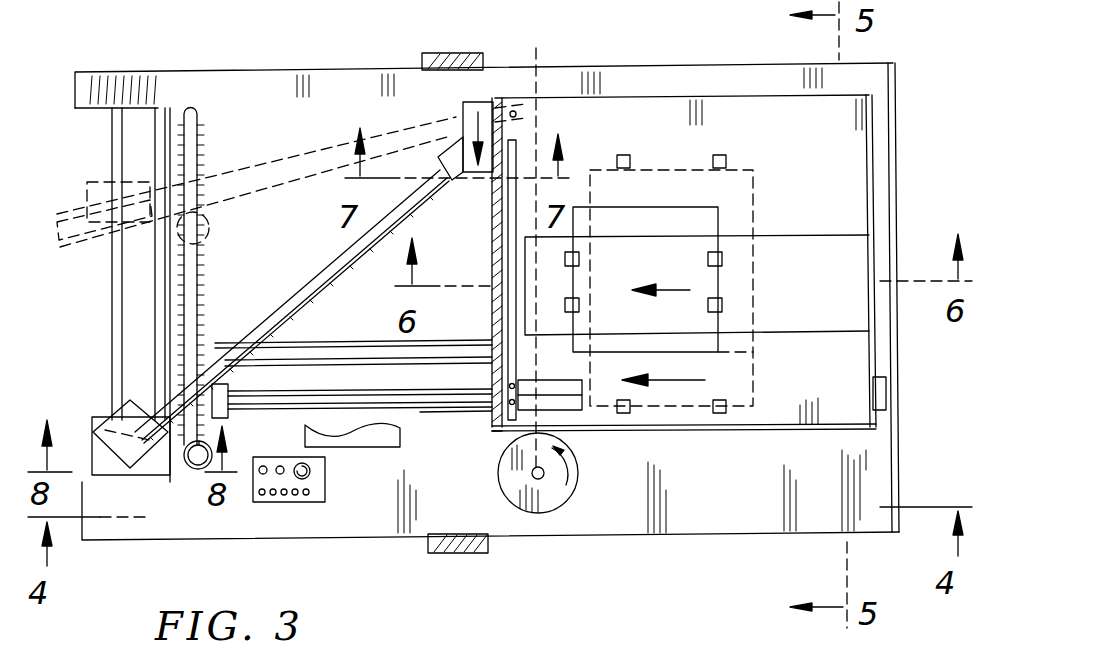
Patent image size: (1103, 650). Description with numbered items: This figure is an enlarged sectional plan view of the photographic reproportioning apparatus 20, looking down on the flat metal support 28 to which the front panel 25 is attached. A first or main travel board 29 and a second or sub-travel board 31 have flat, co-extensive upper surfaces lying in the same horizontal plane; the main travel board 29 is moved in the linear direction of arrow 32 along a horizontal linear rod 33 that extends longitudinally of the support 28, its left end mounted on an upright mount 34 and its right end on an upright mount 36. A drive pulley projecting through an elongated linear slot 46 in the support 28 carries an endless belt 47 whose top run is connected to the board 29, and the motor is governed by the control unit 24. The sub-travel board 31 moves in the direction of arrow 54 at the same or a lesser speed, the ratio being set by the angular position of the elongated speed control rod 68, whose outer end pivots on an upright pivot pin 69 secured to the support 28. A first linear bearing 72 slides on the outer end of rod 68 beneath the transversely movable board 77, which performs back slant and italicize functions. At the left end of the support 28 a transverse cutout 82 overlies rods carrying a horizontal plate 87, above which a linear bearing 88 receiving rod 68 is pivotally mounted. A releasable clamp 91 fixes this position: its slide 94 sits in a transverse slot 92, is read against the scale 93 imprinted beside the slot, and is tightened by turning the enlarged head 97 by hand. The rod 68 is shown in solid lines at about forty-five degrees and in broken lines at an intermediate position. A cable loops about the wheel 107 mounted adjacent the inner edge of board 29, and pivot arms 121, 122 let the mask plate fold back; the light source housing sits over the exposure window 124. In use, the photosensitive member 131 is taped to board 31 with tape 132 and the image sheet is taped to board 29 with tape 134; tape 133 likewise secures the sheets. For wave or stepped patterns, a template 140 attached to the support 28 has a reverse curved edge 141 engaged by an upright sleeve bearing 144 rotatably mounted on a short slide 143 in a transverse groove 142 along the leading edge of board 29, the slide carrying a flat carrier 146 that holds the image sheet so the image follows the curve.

The photographic reproportioning apparatus 20 is at (905, 62).
The control unit 24 is at (325, 483).
The front panel 25 is at (730, 533).
The support 28 is at (352, 78).
The main travel board 29 is at (850, 145).
The sub-travel board 31 is at (878, 248).
The arrow 32 is at (685, 380).
The horizontal linear rod 33 is at (430, 406).
The upright mount 34 is at (230, 392).
The upright mount 36 is at (886, 396).
The elongated linear slot 46 is at (370, 345).
The endless belt 47 is at (322, 348).
The arrow 54 is at (690, 290).
The speed control rod 68 is at (292, 165).
The pivot pin 69 is at (518, 114).
The first linear bearing 72 is at (455, 167).
The transversely movable board 77 is at (482, 108).
The transverse cutout 82 is at (95, 109).
The horizontal plate 87 is at (88, 240).
The linear bearing 88 is at (95, 200).
The releasable clamp 91 is at (225, 226).
The transverse slot 92 is at (191, 107).
The scale 93 is at (203, 132).
The slide 94 is at (212, 432).
The enlarged head 97 is at (205, 468).
The wheel 107 is at (515, 482).
The pivot arm 121 is at (458, 556).
The pivot arm 122 is at (454, 37).
The exposure window 124 is at (545, 56).
The photosensitive member 131 is at (738, 350).
The tape 132 is at (744, 270).
The outer registration frame 133 is at (757, 168).
The tape 134 is at (715, 155).
The template 140 is at (378, 442).
The reverse curved edge 141 is at (365, 386).
The transverse groove 142 is at (506, 215).
The short slide 143 is at (510, 393).
The sleeve bearing 144 is at (493, 435).
The flat carrier 146 is at (556, 400).